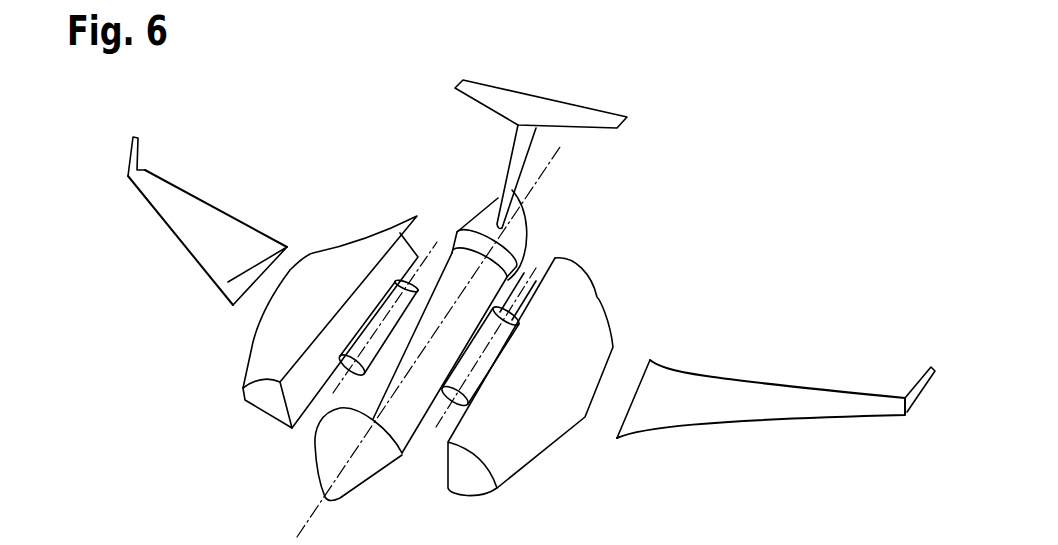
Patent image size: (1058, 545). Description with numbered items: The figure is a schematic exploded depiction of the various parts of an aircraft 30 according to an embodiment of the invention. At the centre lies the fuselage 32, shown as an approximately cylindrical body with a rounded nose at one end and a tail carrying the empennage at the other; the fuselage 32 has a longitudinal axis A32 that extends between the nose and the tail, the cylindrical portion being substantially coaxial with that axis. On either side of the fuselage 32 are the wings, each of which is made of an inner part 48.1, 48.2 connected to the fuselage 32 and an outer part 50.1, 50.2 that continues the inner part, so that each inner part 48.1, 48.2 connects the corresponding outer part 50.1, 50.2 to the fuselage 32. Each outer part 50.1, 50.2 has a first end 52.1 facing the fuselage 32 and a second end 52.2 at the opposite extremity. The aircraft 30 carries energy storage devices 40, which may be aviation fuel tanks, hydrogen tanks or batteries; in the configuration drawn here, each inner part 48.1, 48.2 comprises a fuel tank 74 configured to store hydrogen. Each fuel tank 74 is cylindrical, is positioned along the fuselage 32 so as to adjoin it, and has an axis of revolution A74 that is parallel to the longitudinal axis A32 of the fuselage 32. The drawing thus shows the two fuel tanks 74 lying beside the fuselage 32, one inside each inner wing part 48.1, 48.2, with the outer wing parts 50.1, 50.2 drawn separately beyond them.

The aircraft 30 is at (167, 408).
The fuselage 32 is at (323, 455).
The longitudinal axis A32 is at (307, 515).
The energy storage device 40 is at (339, 361).
The fuel tank 74 is at (393, 285).
The axis of revolution A74 is at (434, 247).
The inner part 48.1 is at (266, 346).
The inner part 48.2 is at (538, 437).
The outer part 50.1 is at (183, 220).
The outer part 50.2 is at (795, 410).
The first end 52.1 is at (236, 283).
The second end 52.2 is at (143, 170).